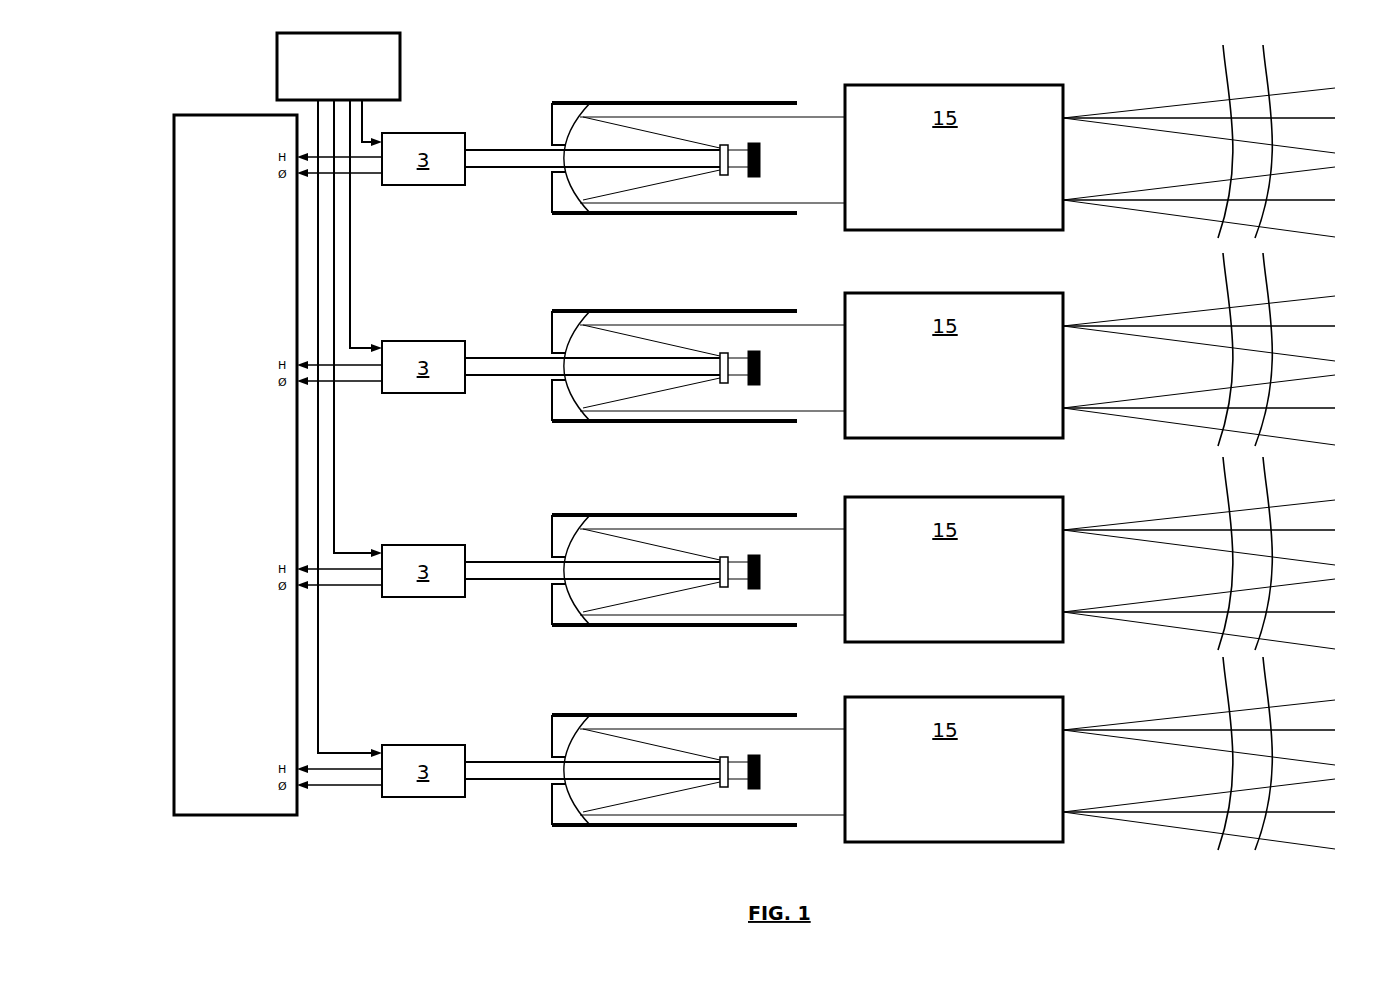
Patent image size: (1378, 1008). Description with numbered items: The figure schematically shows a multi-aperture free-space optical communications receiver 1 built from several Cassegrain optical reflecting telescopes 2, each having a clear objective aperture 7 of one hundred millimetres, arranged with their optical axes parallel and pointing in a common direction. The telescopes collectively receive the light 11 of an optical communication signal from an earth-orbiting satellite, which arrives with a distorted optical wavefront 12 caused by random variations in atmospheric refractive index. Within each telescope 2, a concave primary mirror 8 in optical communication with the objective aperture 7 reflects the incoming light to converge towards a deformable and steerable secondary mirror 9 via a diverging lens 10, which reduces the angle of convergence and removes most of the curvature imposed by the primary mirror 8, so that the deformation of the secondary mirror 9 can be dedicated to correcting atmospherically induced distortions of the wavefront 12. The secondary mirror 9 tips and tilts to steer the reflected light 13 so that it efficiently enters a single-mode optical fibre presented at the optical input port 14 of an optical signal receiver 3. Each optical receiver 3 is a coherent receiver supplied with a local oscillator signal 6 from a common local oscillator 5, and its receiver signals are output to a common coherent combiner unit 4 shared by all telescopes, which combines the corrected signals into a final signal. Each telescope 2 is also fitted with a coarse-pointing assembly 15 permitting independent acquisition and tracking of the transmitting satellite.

The multi-aperture free-space optical communications receiver 1 is at (1020, 42).
The Cassegrain optical reflecting telescope 2 is at (595, 103).
The optical signal receiver 3 is at (381, 465).
The common coherent combiner unit 4 is at (235, 465).
The common local oscillator 5 is at (338, 66).
The local oscillator signal 6 is at (362, 123).
The clear objective aperture 7 is at (800, 186).
The concave primary mirror 8 is at (557, 128).
The deformable and steerable secondary mirror 9 is at (755, 140).
The diverging lens 10 is at (728, 178).
The light 11 is at (1199, 460).
The distorted optical wavefront 12 is at (1222, 242).
The reflected light beam 13 is at (510, 170).
The optical input port 14 is at (465, 182).
The coarse-pointing assembly 15 is at (954, 463).